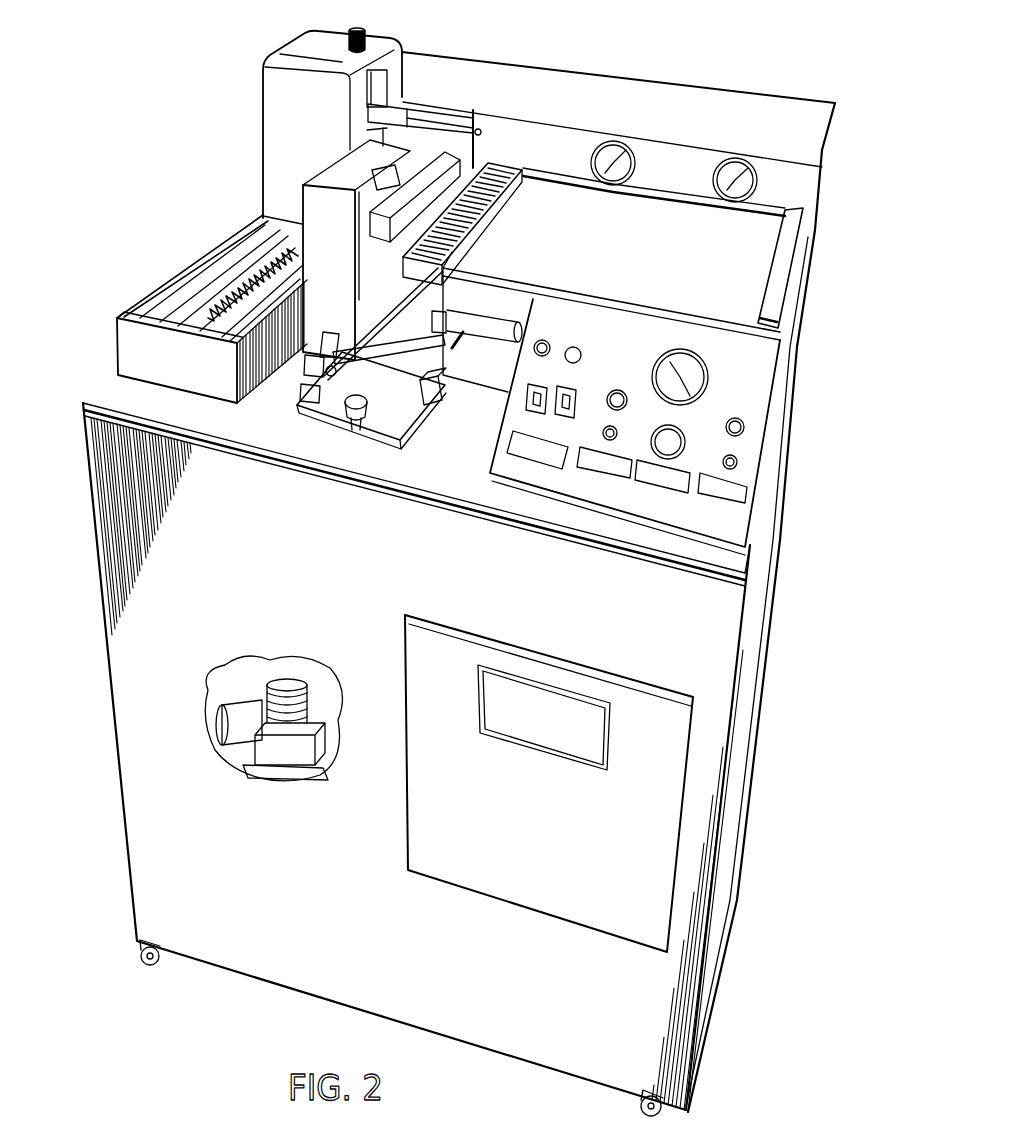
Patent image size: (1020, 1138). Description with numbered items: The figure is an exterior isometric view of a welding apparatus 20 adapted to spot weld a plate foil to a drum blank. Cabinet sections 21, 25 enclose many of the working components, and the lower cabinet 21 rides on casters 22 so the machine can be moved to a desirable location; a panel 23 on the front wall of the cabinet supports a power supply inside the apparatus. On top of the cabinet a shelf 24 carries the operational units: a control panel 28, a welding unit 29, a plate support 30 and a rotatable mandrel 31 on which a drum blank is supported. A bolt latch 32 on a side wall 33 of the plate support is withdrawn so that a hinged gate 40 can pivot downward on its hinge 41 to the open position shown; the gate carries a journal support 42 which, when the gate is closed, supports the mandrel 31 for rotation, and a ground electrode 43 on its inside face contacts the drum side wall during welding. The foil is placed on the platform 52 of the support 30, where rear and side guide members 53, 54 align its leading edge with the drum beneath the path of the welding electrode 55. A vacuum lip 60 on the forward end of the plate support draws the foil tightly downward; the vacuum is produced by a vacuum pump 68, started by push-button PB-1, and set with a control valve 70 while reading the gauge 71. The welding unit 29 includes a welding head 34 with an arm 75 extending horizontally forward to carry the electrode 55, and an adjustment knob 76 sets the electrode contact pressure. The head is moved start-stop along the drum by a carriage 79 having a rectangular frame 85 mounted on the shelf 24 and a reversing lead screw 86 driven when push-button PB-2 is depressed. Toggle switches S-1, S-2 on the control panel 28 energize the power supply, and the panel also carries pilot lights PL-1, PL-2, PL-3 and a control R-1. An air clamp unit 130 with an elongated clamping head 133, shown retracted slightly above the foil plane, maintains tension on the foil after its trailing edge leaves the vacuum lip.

The apparatus 20 is at (777, 660).
The cabinet section 21 is at (133, 666).
The casters 22 is at (148, 954).
The panel 23 is at (640, 924).
The shelf 24 is at (447, 487).
The cabinet section 25 is at (665, 88).
The control panel 28 is at (712, 338).
The welding unit 29 is at (275, 42).
The plate support 30 is at (766, 236).
The rotatable mandrel 31 is at (308, 380).
The bolt latch 32 is at (489, 326).
The side wall 33 is at (499, 290).
The welding head 34 is at (272, 116).
The hinged gate 40 is at (413, 436).
The hinge 41 is at (388, 357).
The journal support 42 is at (350, 420).
The ground electrode 43 is at (428, 396).
The platform 52 is at (630, 296).
The rear guide member 53 is at (782, 264).
The side guide member 54 is at (647, 190).
The welding electrode 55 is at (481, 137).
The vacuum lip 60 is at (508, 162).
The vacuum pump 68 is at (306, 708).
The control valve 70 is at (682, 431).
The gauge 71 is at (708, 376).
The arm 75 is at (436, 104).
The adjustment knob 76 is at (366, 30).
The carriage 79 is at (106, 348).
The rectangular frame 85 is at (130, 318).
The reversing lead screw 86 is at (218, 308).
The air clamp unit 130 is at (319, 168).
The clamping head 133 is at (377, 233).
The pilot light PL-1 is at (557, 334).
The pilot light PL-2 is at (580, 353).
The pilot light PL-3 is at (743, 408).
The toggle switch S-1 is at (542, 378).
The toggle switch S-2 is at (572, 394).
The relay indicator R-1 is at (627, 384).
The push-button PB-1 is at (610, 440).
The push-button PB-2 is at (730, 469).